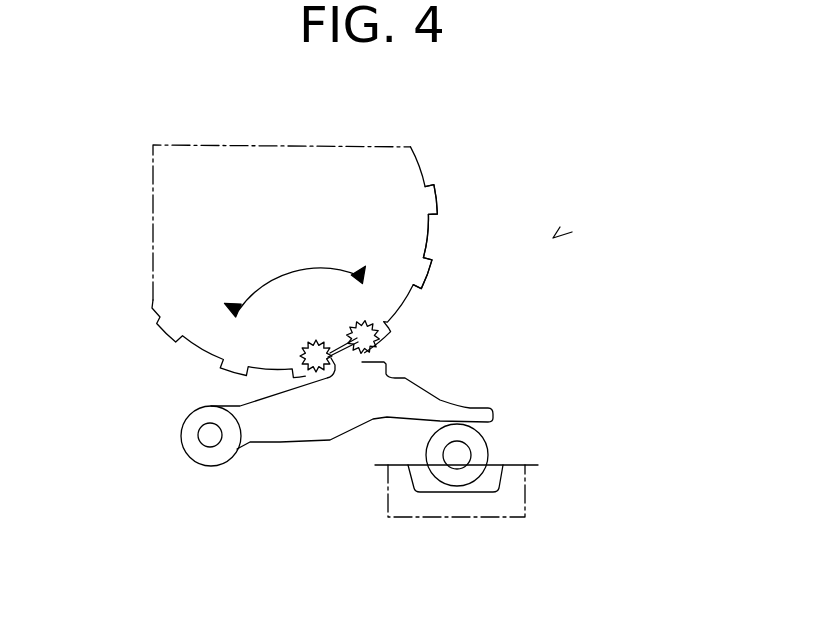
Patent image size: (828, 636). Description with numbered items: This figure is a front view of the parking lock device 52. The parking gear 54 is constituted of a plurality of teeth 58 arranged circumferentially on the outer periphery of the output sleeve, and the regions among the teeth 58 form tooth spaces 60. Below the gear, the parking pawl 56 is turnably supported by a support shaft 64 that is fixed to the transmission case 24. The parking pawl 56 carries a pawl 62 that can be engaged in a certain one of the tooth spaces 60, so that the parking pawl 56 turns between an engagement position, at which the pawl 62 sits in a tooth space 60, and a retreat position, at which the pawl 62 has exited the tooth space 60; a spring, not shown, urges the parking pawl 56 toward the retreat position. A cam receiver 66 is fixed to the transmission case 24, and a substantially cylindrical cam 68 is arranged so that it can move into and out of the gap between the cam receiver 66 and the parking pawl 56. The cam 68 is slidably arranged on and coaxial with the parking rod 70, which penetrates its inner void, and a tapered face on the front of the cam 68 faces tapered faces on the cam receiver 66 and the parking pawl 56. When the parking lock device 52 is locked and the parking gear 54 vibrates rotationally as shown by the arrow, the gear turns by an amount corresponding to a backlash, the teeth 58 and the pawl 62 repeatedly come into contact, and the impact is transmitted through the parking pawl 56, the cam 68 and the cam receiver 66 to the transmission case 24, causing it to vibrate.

The transmission case 24 is at (497, 508).
The parking lock device 52 is at (553, 238).
The parking gear 54 is at (405, 165).
The parking pawl 56 is at (278, 427).
The teeth 58 is at (430, 200).
The tooth spaces 60 is at (430, 238).
The pawl 62 is at (362, 362).
The support shaft 64 is at (210, 435).
The cam receiver 66 is at (470, 490).
The cam 68 is at (480, 448).
The parking rod 70 is at (450, 455).